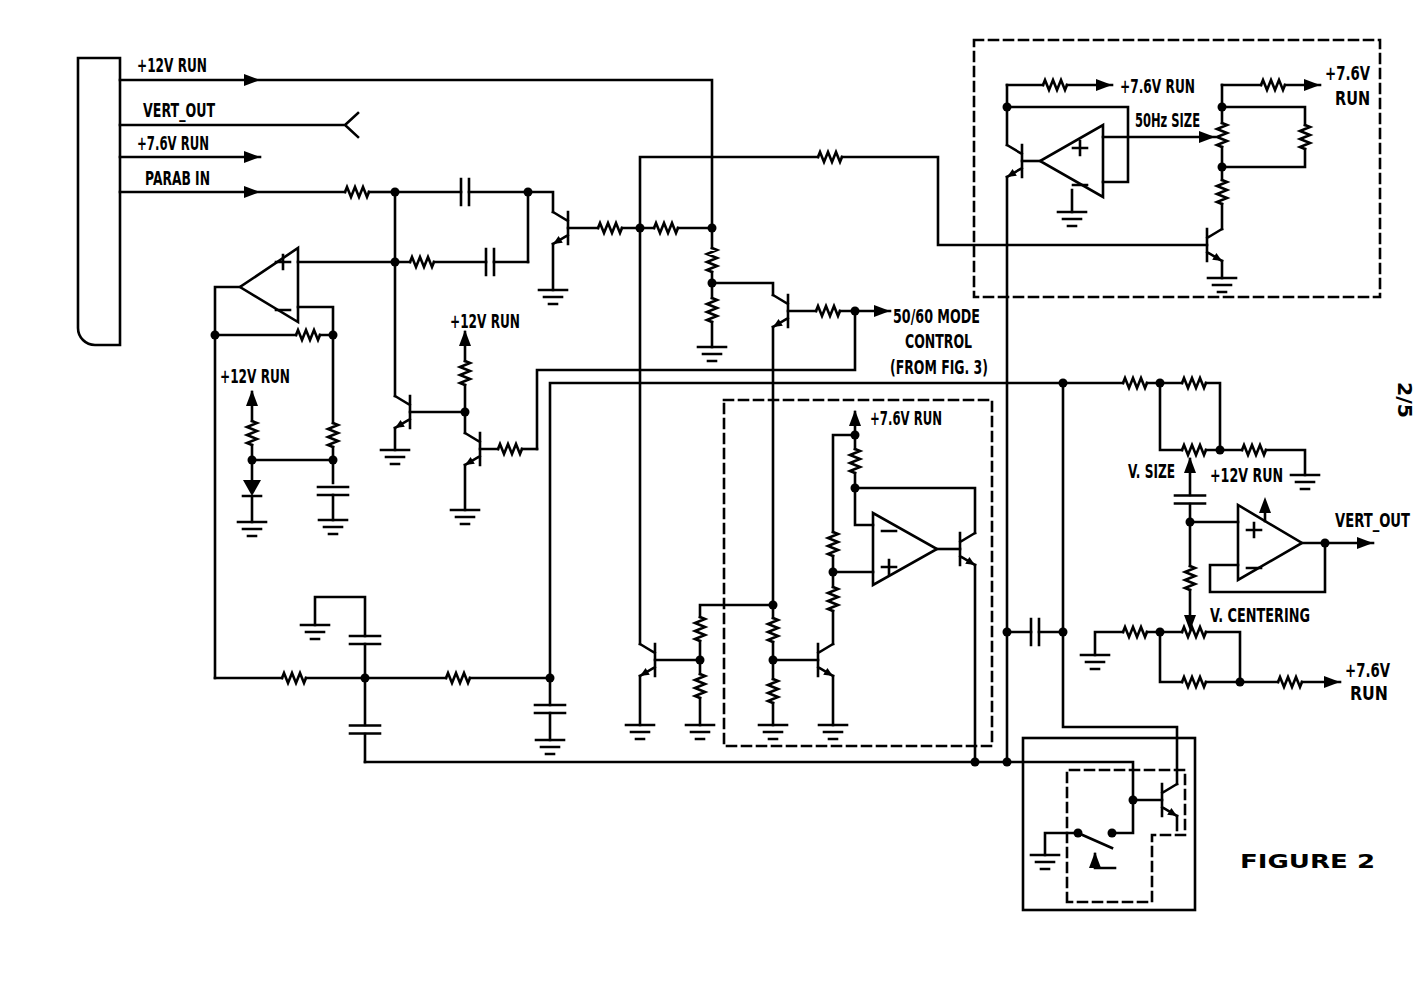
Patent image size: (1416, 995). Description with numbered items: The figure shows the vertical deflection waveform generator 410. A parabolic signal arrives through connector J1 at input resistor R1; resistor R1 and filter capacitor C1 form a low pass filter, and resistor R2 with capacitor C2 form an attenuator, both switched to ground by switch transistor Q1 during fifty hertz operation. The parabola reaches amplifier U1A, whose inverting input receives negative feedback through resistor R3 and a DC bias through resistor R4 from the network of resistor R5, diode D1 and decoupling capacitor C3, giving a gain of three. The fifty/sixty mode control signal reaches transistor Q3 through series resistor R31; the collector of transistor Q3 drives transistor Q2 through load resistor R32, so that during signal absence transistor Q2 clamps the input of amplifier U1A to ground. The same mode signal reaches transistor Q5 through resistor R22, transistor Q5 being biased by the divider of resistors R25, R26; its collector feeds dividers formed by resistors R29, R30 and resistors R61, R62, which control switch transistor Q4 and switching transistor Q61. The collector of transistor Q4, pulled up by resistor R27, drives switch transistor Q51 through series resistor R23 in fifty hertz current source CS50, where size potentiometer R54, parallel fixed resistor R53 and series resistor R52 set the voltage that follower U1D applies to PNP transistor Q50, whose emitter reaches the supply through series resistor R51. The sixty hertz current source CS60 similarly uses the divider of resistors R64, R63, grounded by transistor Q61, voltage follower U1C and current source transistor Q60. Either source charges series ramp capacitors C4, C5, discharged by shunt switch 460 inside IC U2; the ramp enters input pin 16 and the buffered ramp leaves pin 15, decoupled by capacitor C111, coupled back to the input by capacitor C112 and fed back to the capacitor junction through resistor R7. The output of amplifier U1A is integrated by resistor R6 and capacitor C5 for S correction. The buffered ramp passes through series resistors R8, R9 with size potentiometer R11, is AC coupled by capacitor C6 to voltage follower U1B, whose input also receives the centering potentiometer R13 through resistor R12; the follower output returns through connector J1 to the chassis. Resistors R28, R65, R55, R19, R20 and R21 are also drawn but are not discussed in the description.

The connector J1 is at (112, 56).
The input resistor R1 is at (367, 220).
The filter capacitor C1 is at (461, 165).
The capacitor C2 is at (503, 238).
The resistor R2 is at (440, 290).
The amplifier U1A is at (305, 458).
The resistor R3 is at (274, 360).
The resistor R4 is at (351, 409).
The resistor R5 is at (270, 435).
The diode D1 is at (266, 506).
The decoupling capacitor C3 is at (354, 507).
The switch transistor Q1 is at (567, 258).
The transistor Q2 is at (420, 430).
The transistor Q3 is at (471, 478).
The series resistor R31 is at (517, 476).
The load resistor R32 is at (482, 381).
The resistor 2.2K R28 is at (623, 203).
The resistor R27 is at (682, 203).
The resistor R25 is at (692, 263).
The resistor R26 is at (698, 329).
The series resistor R23 is at (1011, 198).
The resistor R22 is at (853, 287).
The transistor Q5 is at (764, 444).
The switch transistor Q4 is at (659, 691).
The resistor R29 is at (718, 639).
The resistor R30 is at (684, 701).
The 60 Hz current source CS60 is at (962, 737).
The load resistor R61 is at (756, 642).
The load resistor R62 is at (757, 701).
The switching transistor Q61 is at (816, 691).
The fixed resistor R63 is at (810, 600).
The fixed resistor R64 is at (819, 498).
The resistor 20K R65 is at (872, 467).
The voltage follower U1C is at (901, 543).
The current source transistor Q60 is at (956, 647).
The resistor R6 is at (290, 705).
The resistor R7 is at (457, 653).
The ramp forming capacitor C5 is at (363, 637).
The ramp forming capacitor C4 is at (387, 720).
The capacitor C111 is at (525, 716).
The vertical deflection waveform generator 410 is at (669, 817).
The capacitor C112 is at (1035, 659).
The 50 Hz current source CS50 is at (1368, 294).
The series resistor R51 is at (1059, 73).
The amplifier U1D is at (1111, 166).
The PNP transistor Q50 is at (1009, 161).
The series resistor R52 is at (1271, 73).
The potentiometer R54 is at (1239, 147).
The fixed resistor R53 is at (1266, 137).
The resistor 10K R55 is at (1239, 203).
The switch transistor Q51 is at (1232, 260).
The series resistor R8 is at (1151, 410).
The series resistor R9 is at (1193, 404).
The potentiometer R11 is at (1239, 436).
The capacitor C6 is at (1169, 512).
The resistor R12 is at (1172, 598).
The voltage follower amplifier U1B is at (1291, 545).
The resistor 68K R19 is at (1114, 661).
The potentiometer R13 is at (1193, 654).
The resistor 1.2K R20 is at (1222, 696).
The resistor 5.6K R21 is at (1307, 708).
The integrated circuit U2 is at (1109, 824).
The output pin 15 is at (1150, 756).
The input pin 16 is at (1037, 781).
The shunt connected switch 460 is at (1080, 865).